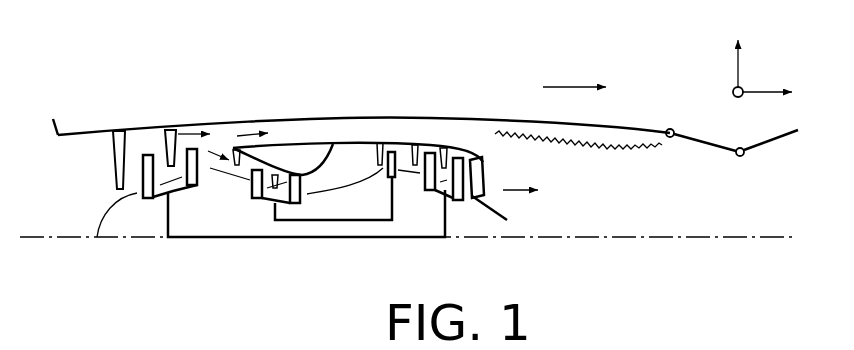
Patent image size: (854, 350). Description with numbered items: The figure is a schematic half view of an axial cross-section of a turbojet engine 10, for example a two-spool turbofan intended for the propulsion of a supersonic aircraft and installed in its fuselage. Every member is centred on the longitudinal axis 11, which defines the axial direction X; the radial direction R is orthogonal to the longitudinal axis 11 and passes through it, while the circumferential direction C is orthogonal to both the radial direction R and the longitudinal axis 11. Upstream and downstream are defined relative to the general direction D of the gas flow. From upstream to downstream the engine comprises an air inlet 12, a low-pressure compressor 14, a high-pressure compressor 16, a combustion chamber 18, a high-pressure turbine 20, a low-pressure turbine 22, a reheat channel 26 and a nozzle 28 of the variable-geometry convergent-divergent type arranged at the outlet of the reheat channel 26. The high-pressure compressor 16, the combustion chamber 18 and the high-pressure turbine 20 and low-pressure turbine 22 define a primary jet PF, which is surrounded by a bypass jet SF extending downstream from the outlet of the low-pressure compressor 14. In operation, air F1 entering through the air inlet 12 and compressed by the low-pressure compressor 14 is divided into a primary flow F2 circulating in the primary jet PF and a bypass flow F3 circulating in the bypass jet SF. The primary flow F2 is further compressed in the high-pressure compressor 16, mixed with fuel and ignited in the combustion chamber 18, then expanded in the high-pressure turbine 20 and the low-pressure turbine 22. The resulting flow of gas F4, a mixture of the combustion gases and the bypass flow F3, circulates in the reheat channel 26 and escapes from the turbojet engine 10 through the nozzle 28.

The turbojet engine 10 is at (213, 95).
The longitudinal axis 11 is at (750, 238).
The air inlet 12 is at (82, 182).
The low-pressure compressor 14 is at (139, 147).
The high-pressure compressor 16 is at (262, 170).
The combustion chamber 18 is at (350, 160).
The high-pressure turbine 20 is at (401, 152).
The low-pressure turbine 22 is at (470, 152).
The reheat channel 26 is at (597, 194).
The nozzle 28 is at (700, 147).
The bypass jet SF is at (323, 132).
The primary jet PF is at (285, 178).
The air F1 is at (185, 132).
The primary flow F2 is at (207, 167).
The bypass flow F3 is at (243, 133).
The flow of gas F4 is at (517, 193).
The general direction of the flow of the gases D is at (580, 86).
The radial direction R is at (736, 48).
The axial direction X is at (778, 89).
The circumferential direction C is at (728, 109).